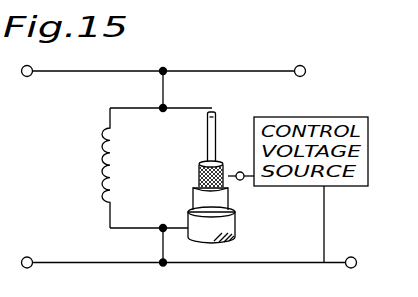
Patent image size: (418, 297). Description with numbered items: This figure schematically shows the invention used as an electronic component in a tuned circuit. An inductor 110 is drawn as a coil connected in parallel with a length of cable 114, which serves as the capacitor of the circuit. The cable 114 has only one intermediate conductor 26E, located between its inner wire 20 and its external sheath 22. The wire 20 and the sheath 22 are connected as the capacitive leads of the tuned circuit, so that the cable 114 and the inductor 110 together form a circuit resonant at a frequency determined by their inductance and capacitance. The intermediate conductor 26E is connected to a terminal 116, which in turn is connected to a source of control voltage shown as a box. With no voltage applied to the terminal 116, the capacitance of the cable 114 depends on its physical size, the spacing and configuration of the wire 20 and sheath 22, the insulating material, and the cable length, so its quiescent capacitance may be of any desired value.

The inductor 110 is at (98, 165).
The wire 20 is at (215, 122).
The cable 114 is at (221, 133).
The intermediate conductor 26E is at (199, 178).
The sheath 22 is at (235, 232).
The terminal 116 is at (243, 181).